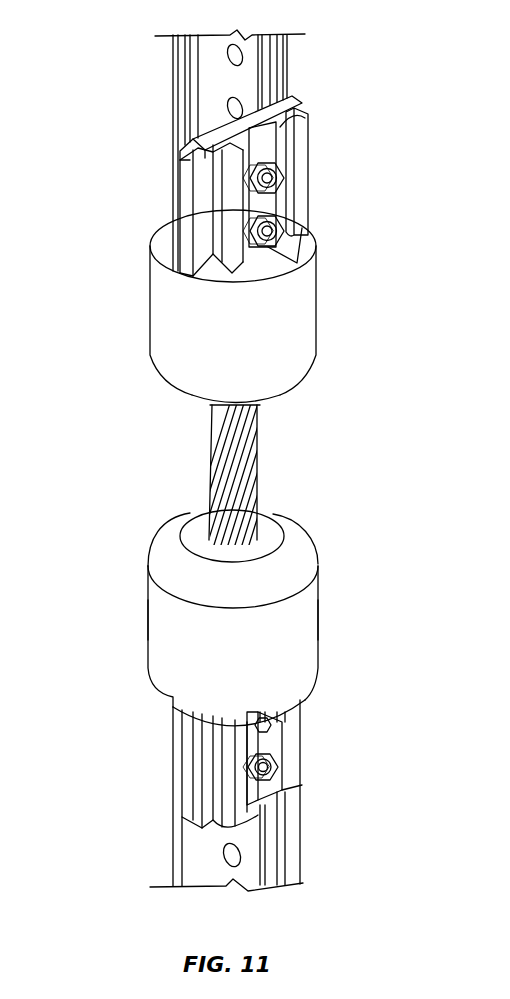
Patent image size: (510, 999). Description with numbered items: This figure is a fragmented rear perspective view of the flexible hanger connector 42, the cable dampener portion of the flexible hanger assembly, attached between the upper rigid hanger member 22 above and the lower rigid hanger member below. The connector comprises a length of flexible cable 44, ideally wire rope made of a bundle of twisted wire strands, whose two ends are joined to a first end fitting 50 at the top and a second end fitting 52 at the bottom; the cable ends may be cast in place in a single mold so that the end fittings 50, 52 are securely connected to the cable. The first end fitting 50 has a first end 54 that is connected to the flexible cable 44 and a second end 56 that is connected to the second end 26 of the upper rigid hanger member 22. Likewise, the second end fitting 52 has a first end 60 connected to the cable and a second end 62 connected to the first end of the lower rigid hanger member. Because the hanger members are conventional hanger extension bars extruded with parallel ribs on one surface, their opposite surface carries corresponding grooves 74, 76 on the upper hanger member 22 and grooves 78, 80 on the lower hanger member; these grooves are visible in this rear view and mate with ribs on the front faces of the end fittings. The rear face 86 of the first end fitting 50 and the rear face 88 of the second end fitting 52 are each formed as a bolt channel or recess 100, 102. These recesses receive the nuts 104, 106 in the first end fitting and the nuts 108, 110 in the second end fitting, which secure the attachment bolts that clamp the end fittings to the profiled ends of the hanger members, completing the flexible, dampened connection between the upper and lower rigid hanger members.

The upper rigid hanger member 22 is at (253, 67).
The second end of the upper rigid hanger member 26 is at (217, 88).
The flexible hanger connector 42 is at (204, 455).
The flexible cable 44 is at (250, 458).
The first end fitting 50 is at (308, 315).
The second end fitting 52 is at (307, 637).
The first end of the first end fitting 54 is at (158, 337).
The second end of the first end fitting 56 is at (308, 158).
The first end of the second end fitting 60 is at (160, 617).
The second end of the second end fitting 62 is at (192, 803).
The groove 74 is at (198, 65).
The groove 76 is at (277, 73).
The groove 78 is at (198, 857).
The groove 80 is at (273, 855).
The rear face of the first end fitting 86 is at (268, 137).
The rear face of the second end fitting 88 is at (270, 742).
The bolt channel or recess 100 is at (292, 189).
The bolt channel or recess 102 is at (288, 778).
The nut 104 is at (252, 178).
The nut 106 is at (252, 229).
The nut 108 is at (263, 727).
The nut 110 is at (275, 767).